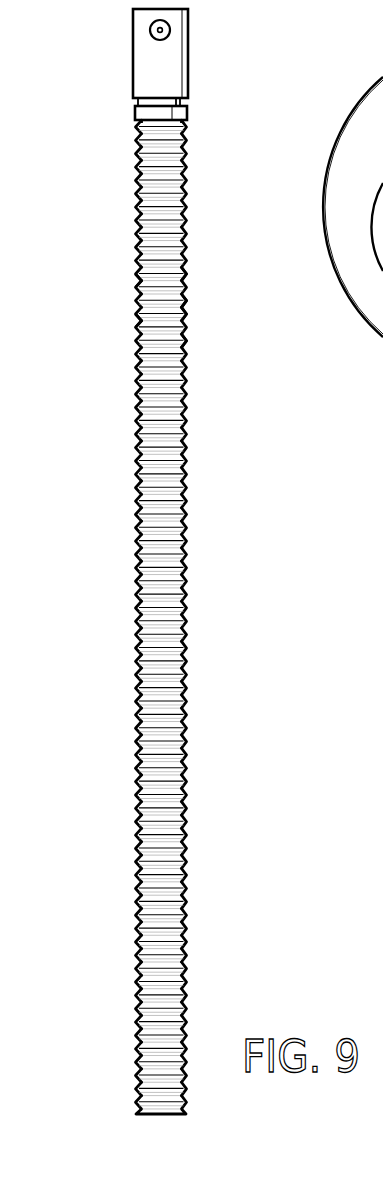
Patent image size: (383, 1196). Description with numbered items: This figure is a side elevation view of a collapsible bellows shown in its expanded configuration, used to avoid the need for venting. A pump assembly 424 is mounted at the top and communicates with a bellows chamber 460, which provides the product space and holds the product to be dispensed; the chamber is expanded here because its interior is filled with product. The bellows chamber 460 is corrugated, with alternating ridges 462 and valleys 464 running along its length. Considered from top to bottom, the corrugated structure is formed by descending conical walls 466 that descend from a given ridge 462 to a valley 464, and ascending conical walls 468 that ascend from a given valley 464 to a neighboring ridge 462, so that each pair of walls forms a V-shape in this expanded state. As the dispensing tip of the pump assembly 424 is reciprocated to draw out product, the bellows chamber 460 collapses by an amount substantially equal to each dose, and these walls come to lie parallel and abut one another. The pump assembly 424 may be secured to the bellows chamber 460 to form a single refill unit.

The pump assembly 424 is at (130, 74).
The bellows chamber 460 is at (113, 612).
The ridges 462 is at (186, 277).
The valleys 464 is at (182, 318).
The descending conical walls 466 is at (142, 278).
The ascending conical walls 468 is at (141, 319).